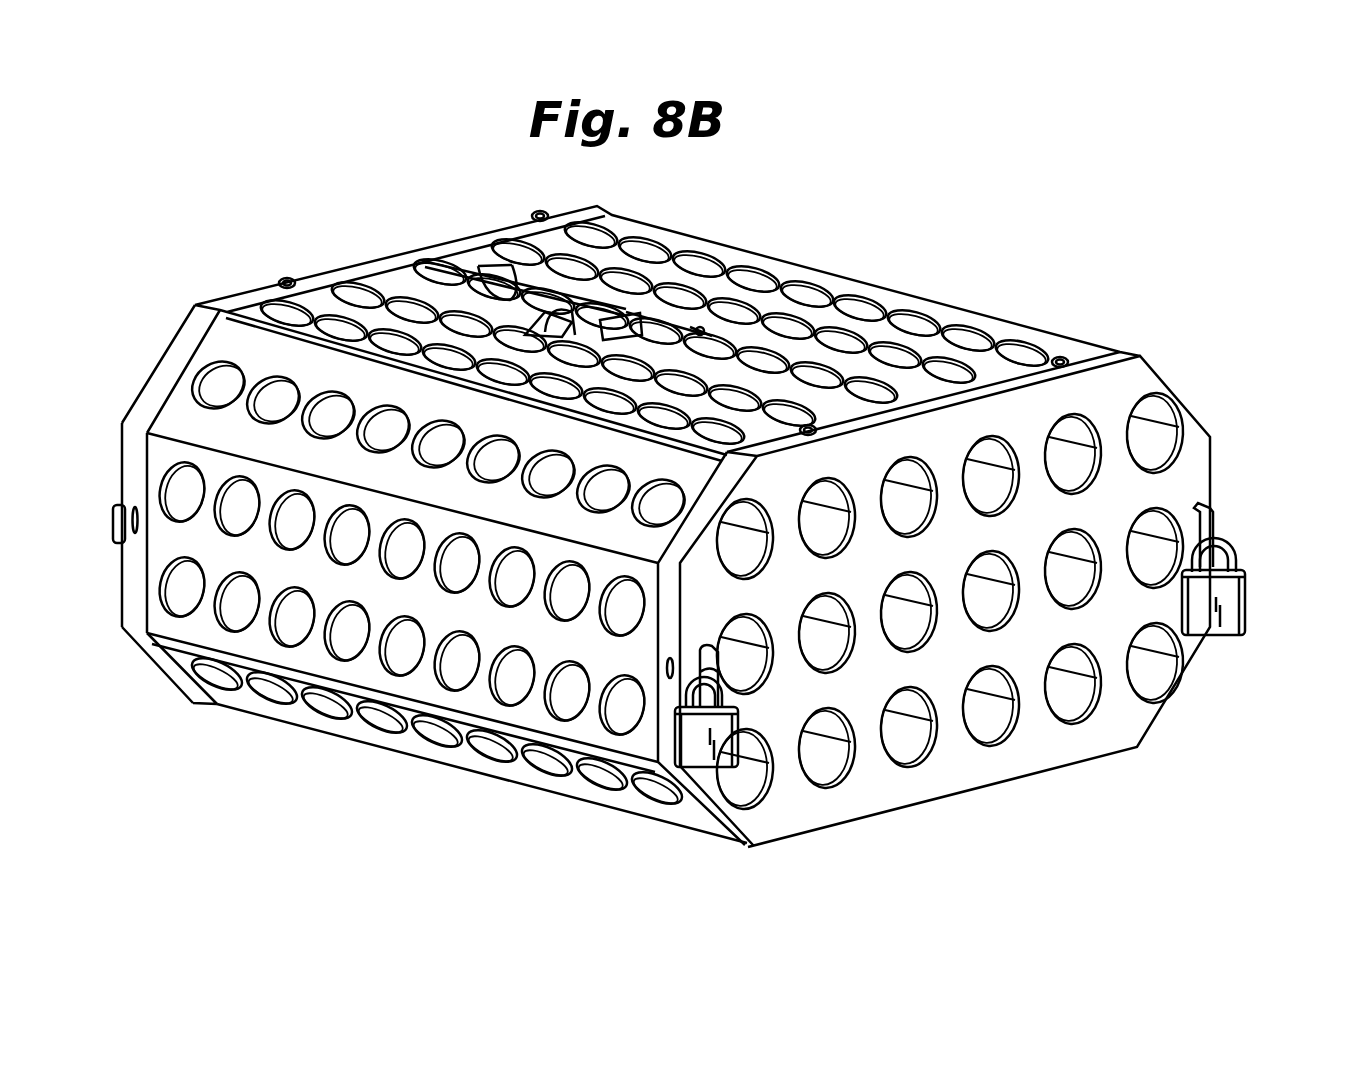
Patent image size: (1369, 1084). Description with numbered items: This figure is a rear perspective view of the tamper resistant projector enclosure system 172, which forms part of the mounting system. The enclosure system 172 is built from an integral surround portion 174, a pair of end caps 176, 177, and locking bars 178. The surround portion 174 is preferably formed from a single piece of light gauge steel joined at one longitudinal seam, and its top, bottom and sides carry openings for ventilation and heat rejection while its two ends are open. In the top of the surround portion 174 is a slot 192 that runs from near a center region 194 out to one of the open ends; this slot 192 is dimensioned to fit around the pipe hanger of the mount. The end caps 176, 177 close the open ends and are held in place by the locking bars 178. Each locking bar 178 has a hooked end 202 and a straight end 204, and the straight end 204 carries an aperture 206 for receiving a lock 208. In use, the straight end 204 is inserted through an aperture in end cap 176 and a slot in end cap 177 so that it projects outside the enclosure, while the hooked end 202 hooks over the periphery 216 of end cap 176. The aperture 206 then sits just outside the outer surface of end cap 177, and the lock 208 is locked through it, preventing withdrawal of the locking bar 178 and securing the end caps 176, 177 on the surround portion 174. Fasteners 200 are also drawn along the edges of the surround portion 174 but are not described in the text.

The tamper resistant projector enclosure system 172 is at (698, 531).
The surround portion 174 is at (810, 270).
The end cap 176 is at (123, 504).
The end cap 177 is at (1013, 770).
The locking bar 178 is at (705, 735).
The slot 192 is at (424, 262).
The center region 194 is at (700, 325).
The fasteners 200 is at (288, 282).
The hooked end 202 is at (113, 517).
The straight end 204 is at (735, 640).
The aperture 206 is at (697, 657).
The lock 208 is at (732, 748).
The periphery 216 is at (127, 560).